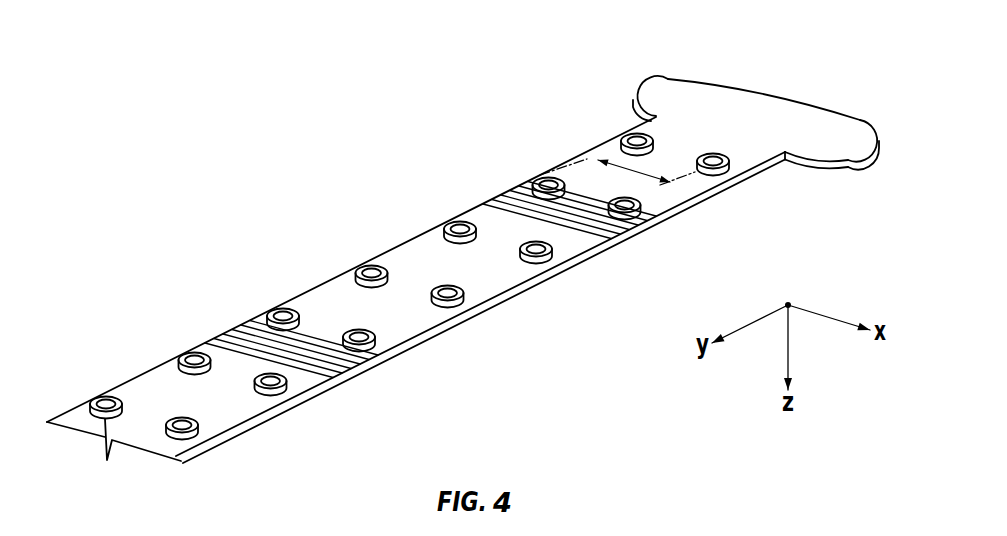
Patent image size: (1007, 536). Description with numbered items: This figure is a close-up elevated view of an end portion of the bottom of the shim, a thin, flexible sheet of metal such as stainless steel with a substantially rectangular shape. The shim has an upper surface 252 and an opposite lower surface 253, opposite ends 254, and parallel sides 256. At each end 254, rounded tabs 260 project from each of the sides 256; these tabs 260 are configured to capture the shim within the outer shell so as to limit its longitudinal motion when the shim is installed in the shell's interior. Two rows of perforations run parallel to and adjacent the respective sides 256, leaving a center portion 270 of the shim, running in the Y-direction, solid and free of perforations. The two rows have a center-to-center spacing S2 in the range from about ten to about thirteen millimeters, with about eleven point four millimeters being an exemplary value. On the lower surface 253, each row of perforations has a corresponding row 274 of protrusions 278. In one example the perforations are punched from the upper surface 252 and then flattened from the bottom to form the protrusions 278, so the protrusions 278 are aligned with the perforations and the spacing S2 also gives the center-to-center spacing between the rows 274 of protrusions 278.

The upper surface 252 is at (410, 311).
The lower surface 253 is at (590, 175).
The ends 254 is at (785, 100).
The sides 256 is at (394, 247).
The rounded tabs 260 is at (665, 92).
The center portion 270 is at (460, 262).
The rows of protrusions 274 is at (167, 445).
The protrusions 278 is at (293, 336).
The center-to-center spacing S2 is at (637, 172).